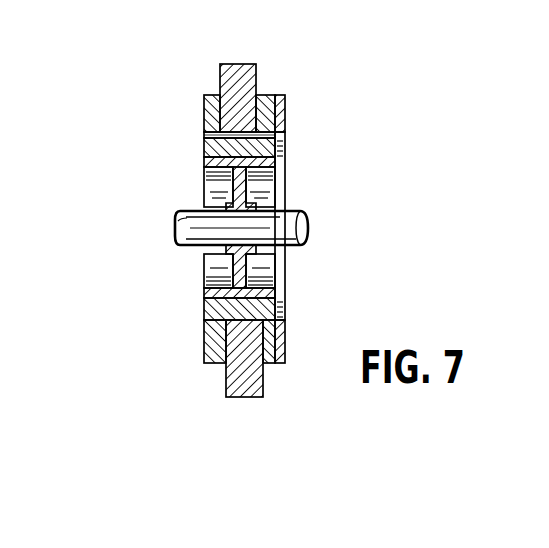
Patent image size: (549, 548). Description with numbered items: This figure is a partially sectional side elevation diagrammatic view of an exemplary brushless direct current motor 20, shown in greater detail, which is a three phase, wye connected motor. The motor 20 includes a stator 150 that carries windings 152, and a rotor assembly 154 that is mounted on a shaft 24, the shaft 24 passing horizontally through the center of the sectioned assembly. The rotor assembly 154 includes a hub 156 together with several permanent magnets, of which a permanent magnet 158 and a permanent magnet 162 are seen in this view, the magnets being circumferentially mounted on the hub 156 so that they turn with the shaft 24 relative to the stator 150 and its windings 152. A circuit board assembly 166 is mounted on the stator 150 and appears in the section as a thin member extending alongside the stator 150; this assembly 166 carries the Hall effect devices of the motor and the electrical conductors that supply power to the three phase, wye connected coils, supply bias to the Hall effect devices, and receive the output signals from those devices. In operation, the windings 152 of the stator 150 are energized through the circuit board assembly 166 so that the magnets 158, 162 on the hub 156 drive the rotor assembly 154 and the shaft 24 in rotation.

The brushless direct current motor 20 is at (132, 215).
The shaft 24 is at (297, 211).
The stator 150 is at (220, 77).
The windings 152 is at (204, 117).
The rotor assembly 154 is at (182, 270).
The hub 156 is at (285, 161).
The permanent magnet 158 is at (204, 146).
The permanent magnet 162 is at (204, 313).
The circuit board assembly 166 is at (285, 118).